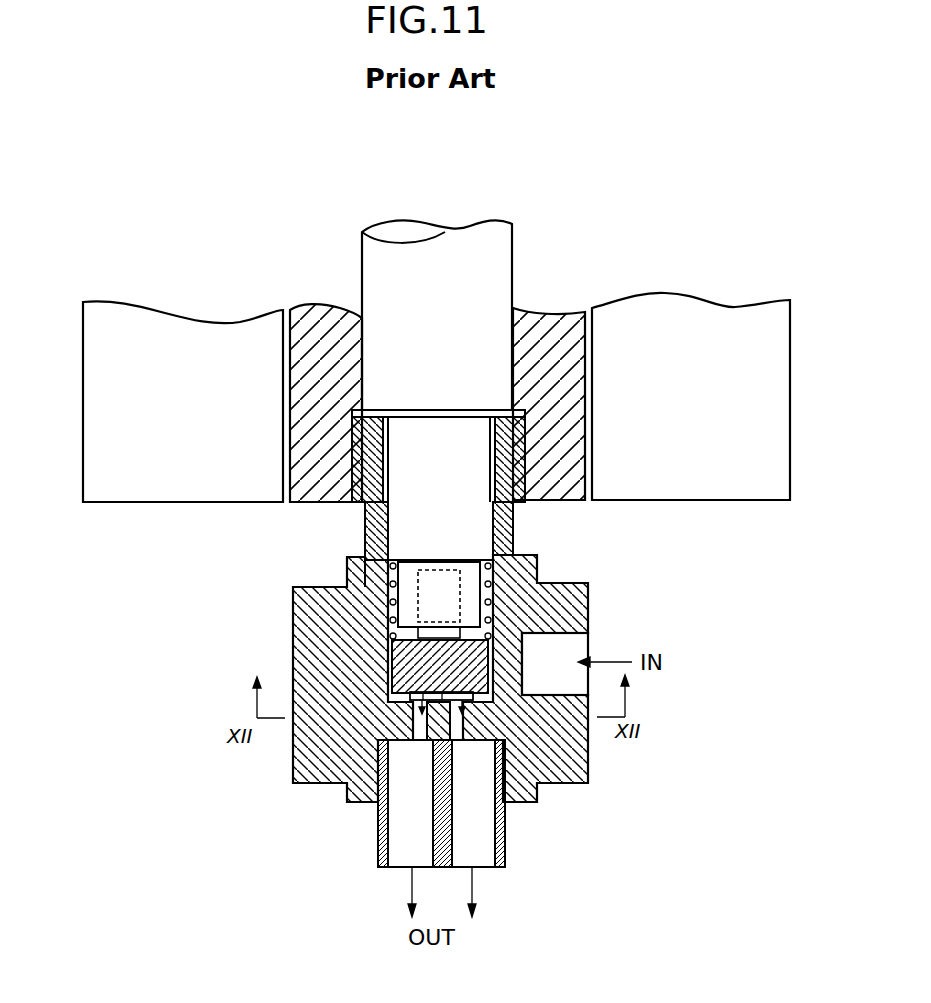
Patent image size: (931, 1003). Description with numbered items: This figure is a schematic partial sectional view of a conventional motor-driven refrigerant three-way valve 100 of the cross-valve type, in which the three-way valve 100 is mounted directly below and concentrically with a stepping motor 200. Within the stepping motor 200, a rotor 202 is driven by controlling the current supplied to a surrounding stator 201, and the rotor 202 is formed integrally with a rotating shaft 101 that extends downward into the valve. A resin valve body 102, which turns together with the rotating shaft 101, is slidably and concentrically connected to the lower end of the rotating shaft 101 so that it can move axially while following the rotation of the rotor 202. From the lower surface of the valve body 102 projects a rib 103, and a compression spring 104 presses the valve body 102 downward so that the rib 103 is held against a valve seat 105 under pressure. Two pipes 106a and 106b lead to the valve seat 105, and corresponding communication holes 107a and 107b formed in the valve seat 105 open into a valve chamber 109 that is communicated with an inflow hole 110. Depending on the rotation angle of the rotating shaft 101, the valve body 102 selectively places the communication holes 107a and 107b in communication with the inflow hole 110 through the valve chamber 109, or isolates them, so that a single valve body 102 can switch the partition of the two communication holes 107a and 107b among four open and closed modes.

The three-way valve 100 is at (435, 711).
The rotating shaft 101 is at (380, 258).
The valve body 102 is at (360, 655).
The rib 103 is at (405, 703).
The compression spring 104 is at (515, 557).
The valve seat 105 is at (372, 603).
The pipe 106a is at (376, 830).
The pipe 106b is at (507, 829).
The communication hole 107a is at (475, 648).
The communication hole 107b is at (420, 690).
The valve chamber 109 is at (588, 785).
The inflow hole 110 is at (565, 643).
The stepping motor 200 is at (693, 235).
The stator 201 is at (130, 320).
The rotor 202 is at (543, 317).